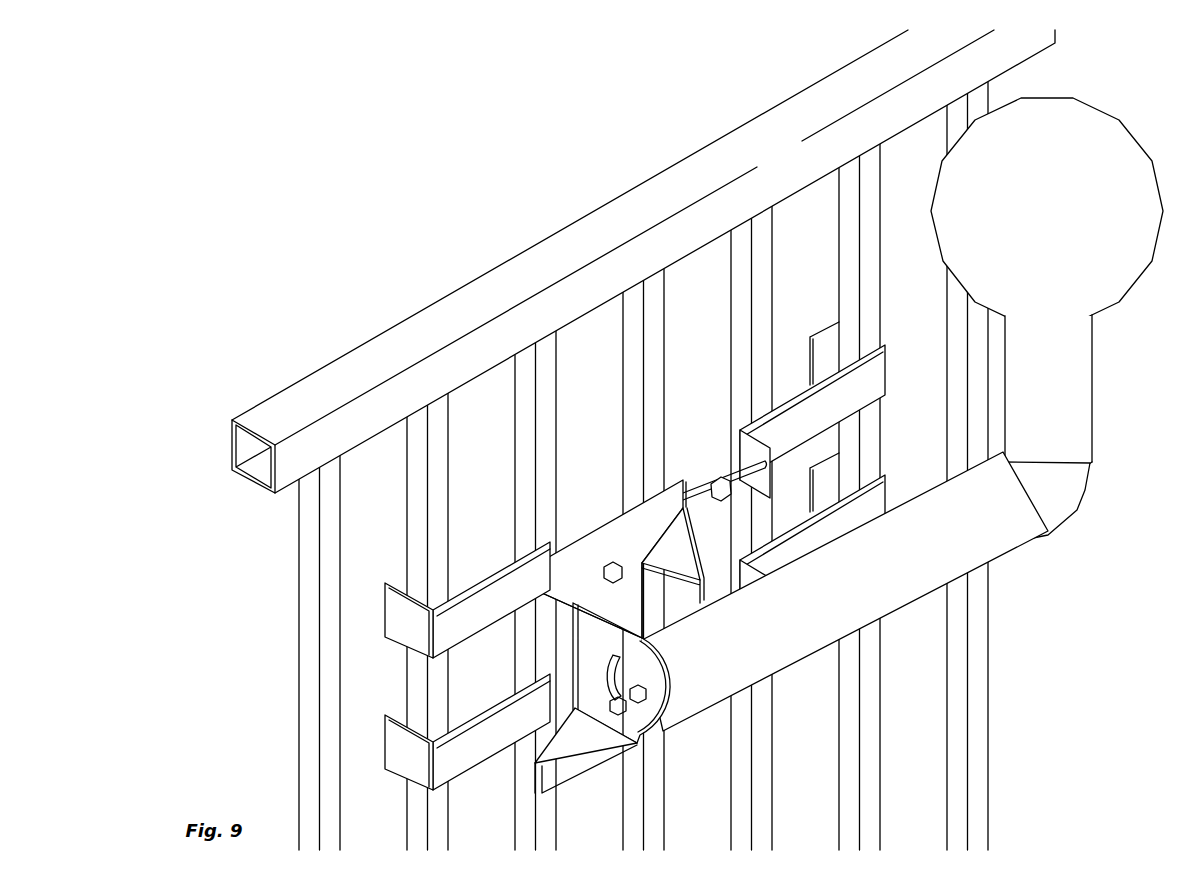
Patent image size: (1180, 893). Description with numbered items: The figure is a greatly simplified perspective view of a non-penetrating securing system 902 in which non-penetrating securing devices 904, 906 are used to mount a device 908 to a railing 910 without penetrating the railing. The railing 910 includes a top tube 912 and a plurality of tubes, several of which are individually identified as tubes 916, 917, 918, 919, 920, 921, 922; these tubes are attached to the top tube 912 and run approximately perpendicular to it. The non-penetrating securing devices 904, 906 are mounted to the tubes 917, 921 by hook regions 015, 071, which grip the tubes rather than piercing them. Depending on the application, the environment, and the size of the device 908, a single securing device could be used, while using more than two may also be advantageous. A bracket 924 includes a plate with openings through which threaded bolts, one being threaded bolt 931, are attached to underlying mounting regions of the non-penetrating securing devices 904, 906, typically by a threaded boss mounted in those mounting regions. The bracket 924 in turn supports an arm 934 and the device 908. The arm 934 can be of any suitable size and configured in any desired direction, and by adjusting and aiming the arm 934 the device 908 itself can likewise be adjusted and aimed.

The non-penetrating securing system 902 is at (483, 127).
The non-penetrating securing device 904 is at (752, 612).
The non-penetrating securing device 906 is at (483, 783).
The device 908 is at (1047, 318).
The railing 910 is at (697, 440).
The top tube 912 is at (264, 276).
The hook region 015 is at (385, 636).
The tube 916 is at (323, 652).
The tube 917 is at (427, 621).
The tube 918 is at (535, 590).
The tube 919 is at (643, 559).
The tube 920 is at (753, 528).
The tube 921 is at (859, 497).
The tube 922 is at (967, 466).
The bracket 924 is at (597, 782).
The threaded bolt 931 is at (613, 560).
The arm 934 is at (845, 591).
The hook region 071 is at (888, 388).